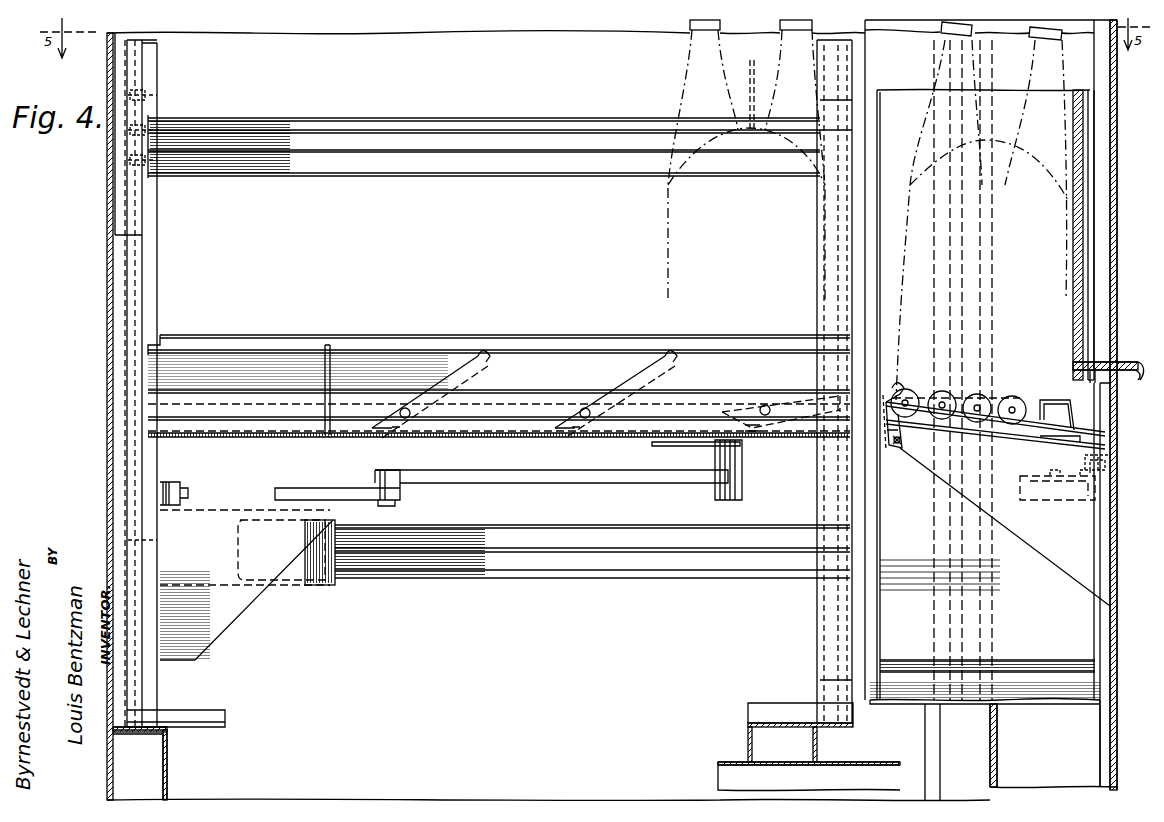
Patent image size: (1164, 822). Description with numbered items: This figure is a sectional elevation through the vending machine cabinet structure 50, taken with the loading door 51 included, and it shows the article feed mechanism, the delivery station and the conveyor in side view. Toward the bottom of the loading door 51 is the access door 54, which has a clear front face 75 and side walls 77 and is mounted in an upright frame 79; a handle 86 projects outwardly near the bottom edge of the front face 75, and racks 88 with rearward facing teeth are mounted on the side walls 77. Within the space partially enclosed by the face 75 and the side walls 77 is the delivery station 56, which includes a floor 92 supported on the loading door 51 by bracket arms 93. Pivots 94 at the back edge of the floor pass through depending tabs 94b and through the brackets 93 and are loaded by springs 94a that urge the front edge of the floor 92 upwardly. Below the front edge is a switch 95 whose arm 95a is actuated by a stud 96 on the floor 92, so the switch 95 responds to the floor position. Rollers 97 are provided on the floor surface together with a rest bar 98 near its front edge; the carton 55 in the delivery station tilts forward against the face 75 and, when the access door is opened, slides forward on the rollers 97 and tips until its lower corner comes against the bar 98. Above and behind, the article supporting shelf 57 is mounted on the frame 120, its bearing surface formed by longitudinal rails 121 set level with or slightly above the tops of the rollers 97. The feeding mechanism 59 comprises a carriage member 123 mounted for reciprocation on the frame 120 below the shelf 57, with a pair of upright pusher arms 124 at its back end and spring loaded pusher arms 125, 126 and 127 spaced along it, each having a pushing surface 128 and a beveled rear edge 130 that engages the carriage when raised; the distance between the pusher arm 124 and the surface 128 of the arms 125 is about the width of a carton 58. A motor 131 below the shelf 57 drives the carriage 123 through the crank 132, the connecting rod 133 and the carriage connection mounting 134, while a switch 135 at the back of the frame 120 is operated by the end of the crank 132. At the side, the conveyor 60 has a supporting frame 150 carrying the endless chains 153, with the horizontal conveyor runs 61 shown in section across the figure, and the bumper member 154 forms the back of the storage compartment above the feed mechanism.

The cabinet structure 50 is at (110, 268).
The loading door 51 is at (1118, 648).
The access door 54 is at (1108, 254).
The carton 55 is at (1096, 332).
The delivery station 56 is at (1088, 418).
The article supporting shelf 57 is at (158, 387).
The carton 58 is at (668, 210).
The feeding mechanism 59 is at (503, 447).
The conveyor 60 is at (307, 326).
The conveyor belt 61 is at (477, 186).
The front face 75 is at (1085, 198).
The side wall 77 is at (1006, 90).
The upright frame 79 is at (918, 700).
The handle 86 is at (1138, 380).
The rack 88 is at (936, 272).
The floor 92 is at (1006, 436).
The bracket arm 93 is at (965, 500).
The pivot 94 is at (895, 450).
The spring 94a is at (905, 460).
The tab 94b is at (893, 392).
The switch 95 is at (1040, 496).
The switch arm 95a is at (1070, 476).
The stud 96 is at (1105, 464).
The rollers 97 is at (1008, 394).
The rest bar 98 is at (1050, 402).
The frame 120 is at (816, 478).
The rails 121 is at (388, 372).
The carriage member 123 is at (535, 404).
The upright pusher arm 124 is at (333, 360).
The spring loaded pusher arm 125 is at (458, 384).
The spring loaded pusher arm 126 is at (638, 384).
The spring loaded pusher arm 127 is at (788, 406).
The pushing surface 128 is at (490, 350).
The beveled rear edge 130 is at (388, 430).
The motor 131 is at (340, 580).
The crank 132 is at (326, 494).
The connecting rod 133 is at (436, 482).
The carriage connection mounting 134 is at (715, 458).
The switch 135 is at (172, 482).
The supporting frame 150 is at (126, 243).
The endless chain 153 is at (140, 275).
The bumper member 154 is at (157, 247).